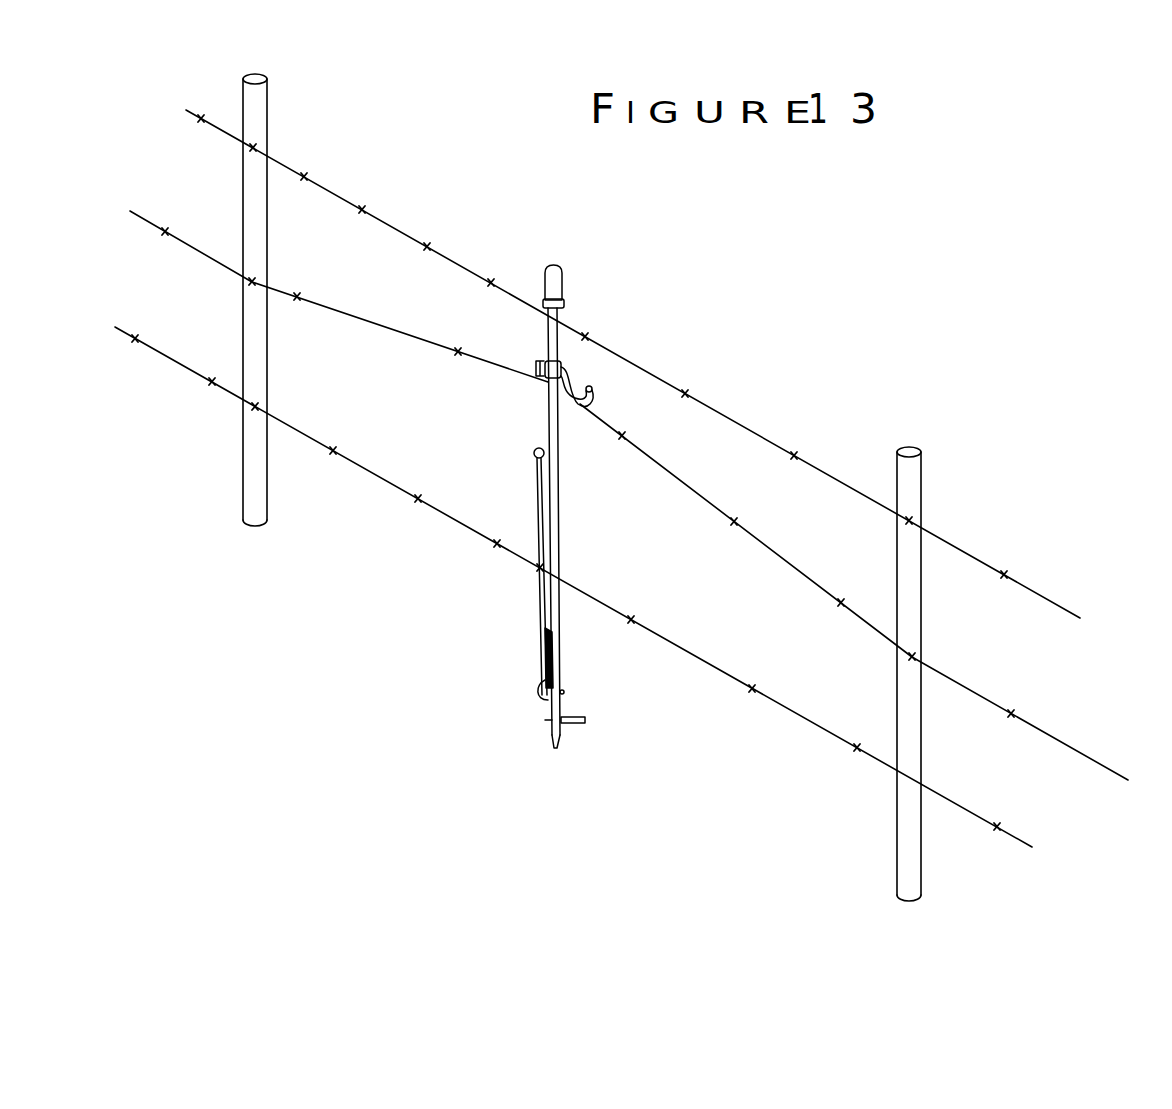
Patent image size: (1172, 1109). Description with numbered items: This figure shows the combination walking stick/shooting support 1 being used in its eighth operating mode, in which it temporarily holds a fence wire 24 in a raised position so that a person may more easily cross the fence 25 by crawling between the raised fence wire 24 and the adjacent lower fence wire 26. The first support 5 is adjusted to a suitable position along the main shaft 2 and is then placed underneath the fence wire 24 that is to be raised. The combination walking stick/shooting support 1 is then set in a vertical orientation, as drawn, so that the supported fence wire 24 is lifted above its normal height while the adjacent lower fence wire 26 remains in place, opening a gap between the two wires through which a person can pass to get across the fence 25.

The combination walking stick/shooting support 1 is at (580, 285).
The main shaft 2 is at (553, 547).
The first support 5 is at (590, 394).
The fence wire 24 is at (483, 377).
The fence 25 is at (950, 469).
The adjacent lower fence wire 26 is at (396, 490).